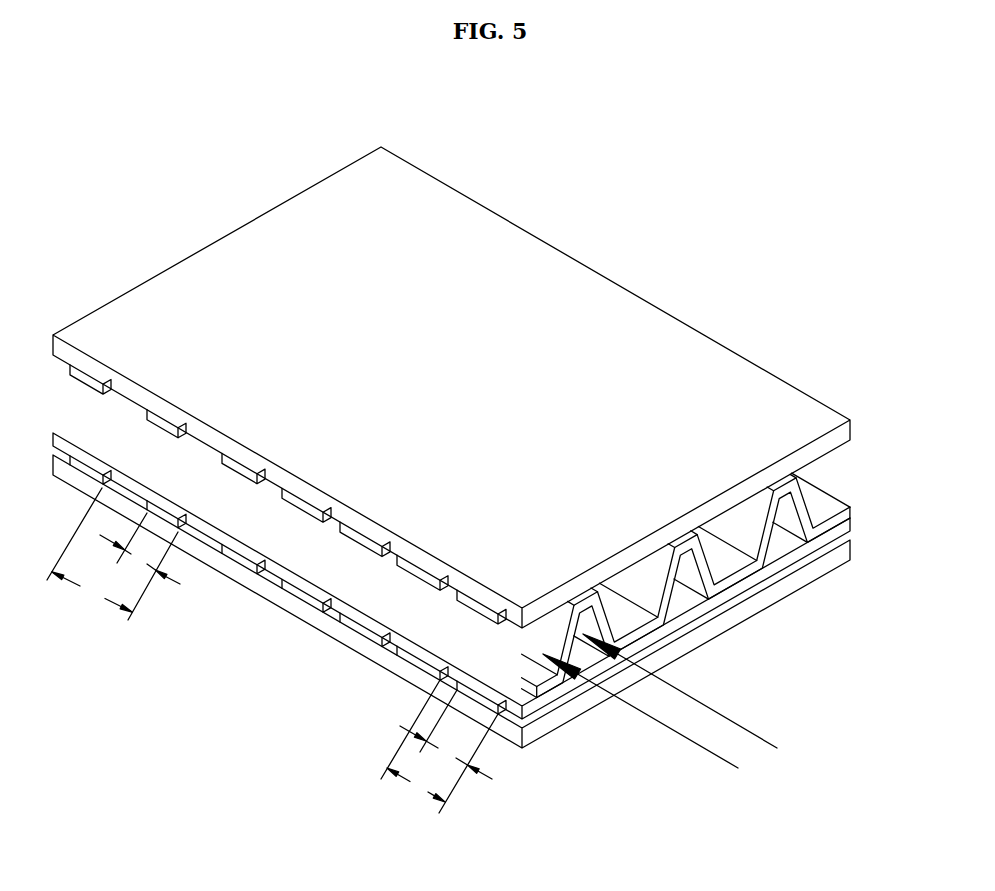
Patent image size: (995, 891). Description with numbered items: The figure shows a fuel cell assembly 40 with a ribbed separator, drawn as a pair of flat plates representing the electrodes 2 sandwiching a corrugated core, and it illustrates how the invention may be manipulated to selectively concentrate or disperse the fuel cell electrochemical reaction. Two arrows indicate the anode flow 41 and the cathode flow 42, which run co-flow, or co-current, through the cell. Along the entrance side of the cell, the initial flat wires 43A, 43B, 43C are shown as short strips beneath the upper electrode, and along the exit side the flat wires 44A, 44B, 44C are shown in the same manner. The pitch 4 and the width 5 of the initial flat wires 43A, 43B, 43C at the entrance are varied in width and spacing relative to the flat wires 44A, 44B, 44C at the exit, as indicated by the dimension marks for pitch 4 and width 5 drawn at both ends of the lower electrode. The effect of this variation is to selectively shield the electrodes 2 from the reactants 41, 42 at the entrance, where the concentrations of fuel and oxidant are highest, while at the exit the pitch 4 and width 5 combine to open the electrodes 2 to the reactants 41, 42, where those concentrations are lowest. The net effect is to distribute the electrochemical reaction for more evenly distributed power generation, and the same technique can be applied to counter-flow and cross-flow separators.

The electrode 2 is at (853, 425).
The fuel cell assembly 40 is at (620, 242).
The anode flow 41 is at (680, 733).
The cathode flow 42 is at (710, 705).
The initial flat wire 43A is at (467, 600).
The initial flat wire 43B is at (412, 562).
The initial flat wire 43C is at (357, 527).
The flat wire 44A is at (238, 455).
The flat wire 44B is at (158, 405).
The flat wire 44C is at (80, 362).
The pitch 4 is at (272, 650).
The width 5 is at (296, 646).